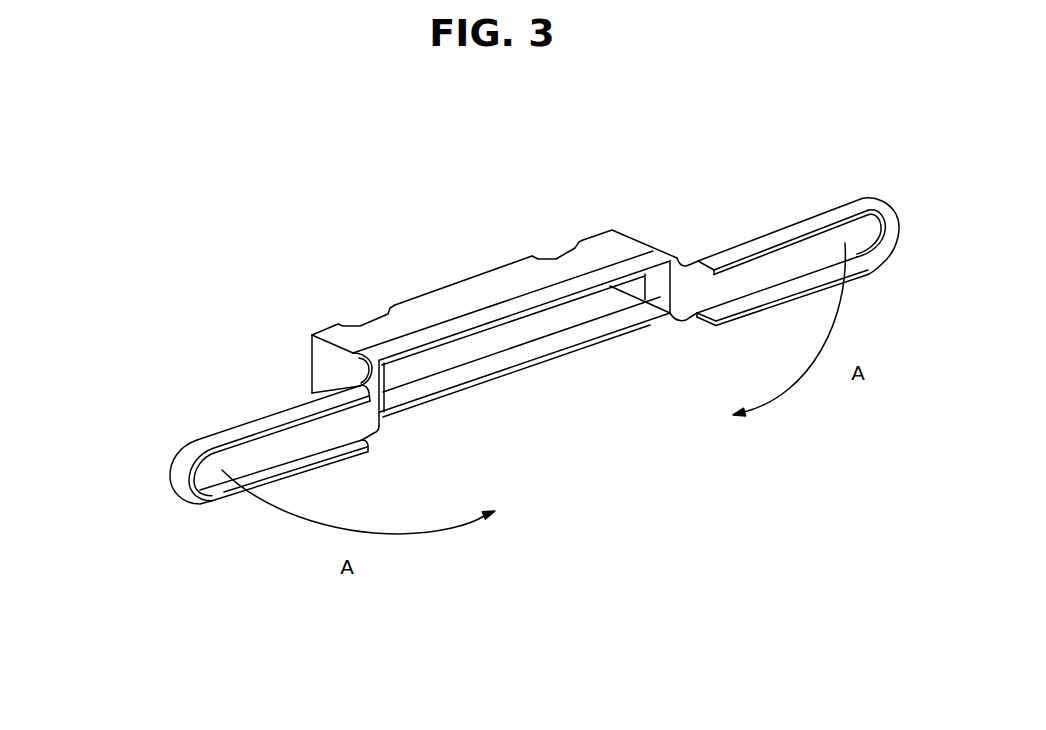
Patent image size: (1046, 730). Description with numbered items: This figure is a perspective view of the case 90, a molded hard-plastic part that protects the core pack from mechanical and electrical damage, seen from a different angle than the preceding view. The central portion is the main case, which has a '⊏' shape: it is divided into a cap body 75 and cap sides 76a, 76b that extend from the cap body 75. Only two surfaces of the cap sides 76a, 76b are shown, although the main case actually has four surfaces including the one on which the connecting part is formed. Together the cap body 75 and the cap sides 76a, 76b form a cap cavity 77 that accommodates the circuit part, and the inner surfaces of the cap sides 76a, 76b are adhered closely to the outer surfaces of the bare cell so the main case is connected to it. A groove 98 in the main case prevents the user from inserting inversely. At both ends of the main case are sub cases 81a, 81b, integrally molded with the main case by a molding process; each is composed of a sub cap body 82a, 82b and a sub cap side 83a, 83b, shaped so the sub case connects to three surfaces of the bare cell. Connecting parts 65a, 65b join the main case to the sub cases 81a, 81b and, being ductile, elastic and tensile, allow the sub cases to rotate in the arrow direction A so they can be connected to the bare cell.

The case 90 is at (856, 101).
The cap body 75 is at (487, 282).
The cap side 76a is at (418, 400).
The cap side 76b is at (582, 265).
The cap cavity 77 is at (491, 366).
The groove 98 is at (556, 253).
The connecting part 65a is at (681, 257).
The connecting part 65b is at (352, 366).
The sub case 81a is at (784, 212).
The sub case 81b is at (235, 413).
The sub cap body 82a is at (744, 288).
The sub cap body 82b is at (210, 479).
The sub cap side 83a is at (850, 203).
The sub cap side 83b is at (176, 476).